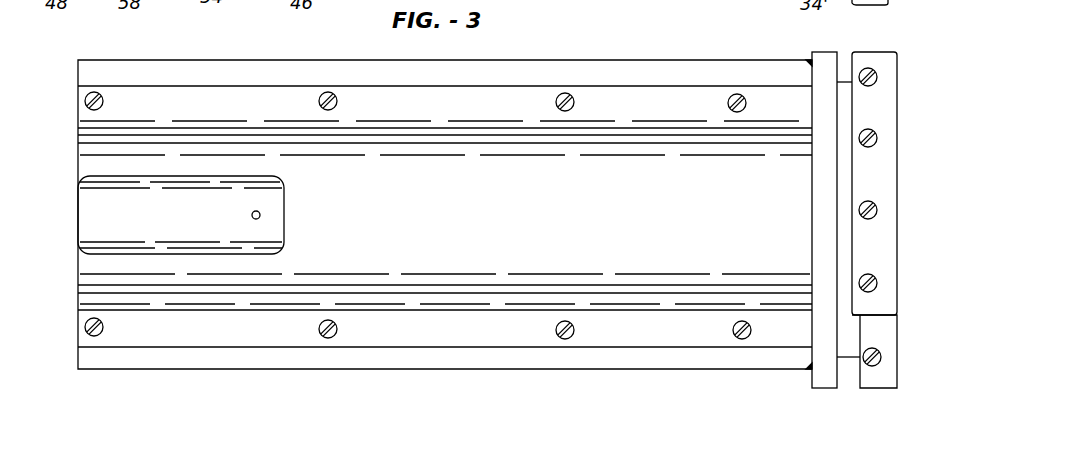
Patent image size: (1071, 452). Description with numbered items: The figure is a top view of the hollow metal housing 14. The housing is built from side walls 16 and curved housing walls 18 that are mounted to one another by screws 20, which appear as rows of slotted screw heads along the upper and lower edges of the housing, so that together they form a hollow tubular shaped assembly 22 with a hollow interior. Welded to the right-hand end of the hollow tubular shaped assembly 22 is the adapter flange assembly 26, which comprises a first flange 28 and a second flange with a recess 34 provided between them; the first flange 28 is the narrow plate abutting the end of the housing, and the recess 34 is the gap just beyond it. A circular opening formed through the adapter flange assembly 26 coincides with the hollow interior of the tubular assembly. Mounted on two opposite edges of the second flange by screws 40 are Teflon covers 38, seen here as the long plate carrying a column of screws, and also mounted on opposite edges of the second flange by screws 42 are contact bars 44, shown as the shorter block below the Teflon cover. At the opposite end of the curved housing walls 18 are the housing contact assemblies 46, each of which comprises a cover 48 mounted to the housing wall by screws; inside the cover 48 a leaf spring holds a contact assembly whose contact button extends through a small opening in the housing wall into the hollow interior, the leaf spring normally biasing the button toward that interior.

The hollow metal housing 14 is at (668, 47).
The side walls 16 is at (299, 60).
The curved housing walls 18 is at (633, 229).
The screws 20 is at (100, 93).
The hollow tubular shaped assembly 22 is at (206, 378).
The adapter flange assembly 26 is at (848, 384).
The first flange 28 is at (819, 390).
The recess 34 is at (845, 70).
The Teflon covers 38 is at (897, 170).
The screws 40 is at (877, 71).
The screws 42 is at (881, 357).
The contact bars 44 is at (897, 340).
The housing contact assemblies 46 is at (293, 217).
The cover 48 is at (194, 228).